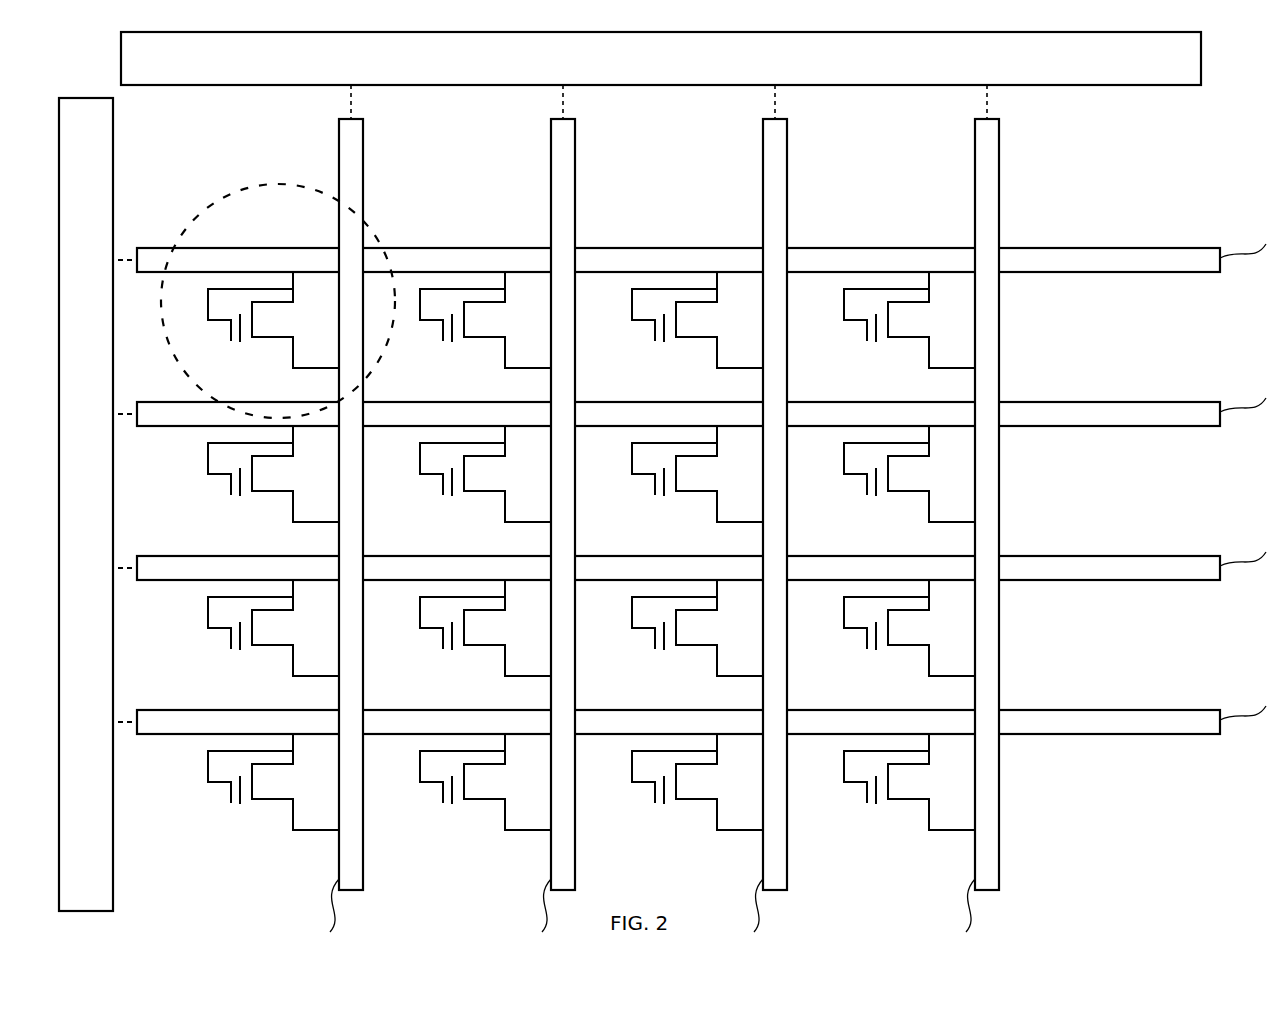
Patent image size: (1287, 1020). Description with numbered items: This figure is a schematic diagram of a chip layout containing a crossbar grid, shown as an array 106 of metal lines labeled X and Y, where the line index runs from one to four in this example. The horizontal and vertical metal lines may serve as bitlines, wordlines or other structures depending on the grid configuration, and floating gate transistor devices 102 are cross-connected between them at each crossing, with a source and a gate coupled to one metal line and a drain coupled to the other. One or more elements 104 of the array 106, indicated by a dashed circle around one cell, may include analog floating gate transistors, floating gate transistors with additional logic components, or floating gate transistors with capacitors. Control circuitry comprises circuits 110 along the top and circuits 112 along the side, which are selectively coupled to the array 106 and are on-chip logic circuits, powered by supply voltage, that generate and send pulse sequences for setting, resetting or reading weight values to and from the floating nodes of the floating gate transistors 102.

The floating gate transistor device 102 is at (238, 345).
The element of the array 104 is at (248, 185).
The array 106 is at (1061, 219).
The circuits 110 is at (1193, 68).
The circuits 112 is at (112, 168).